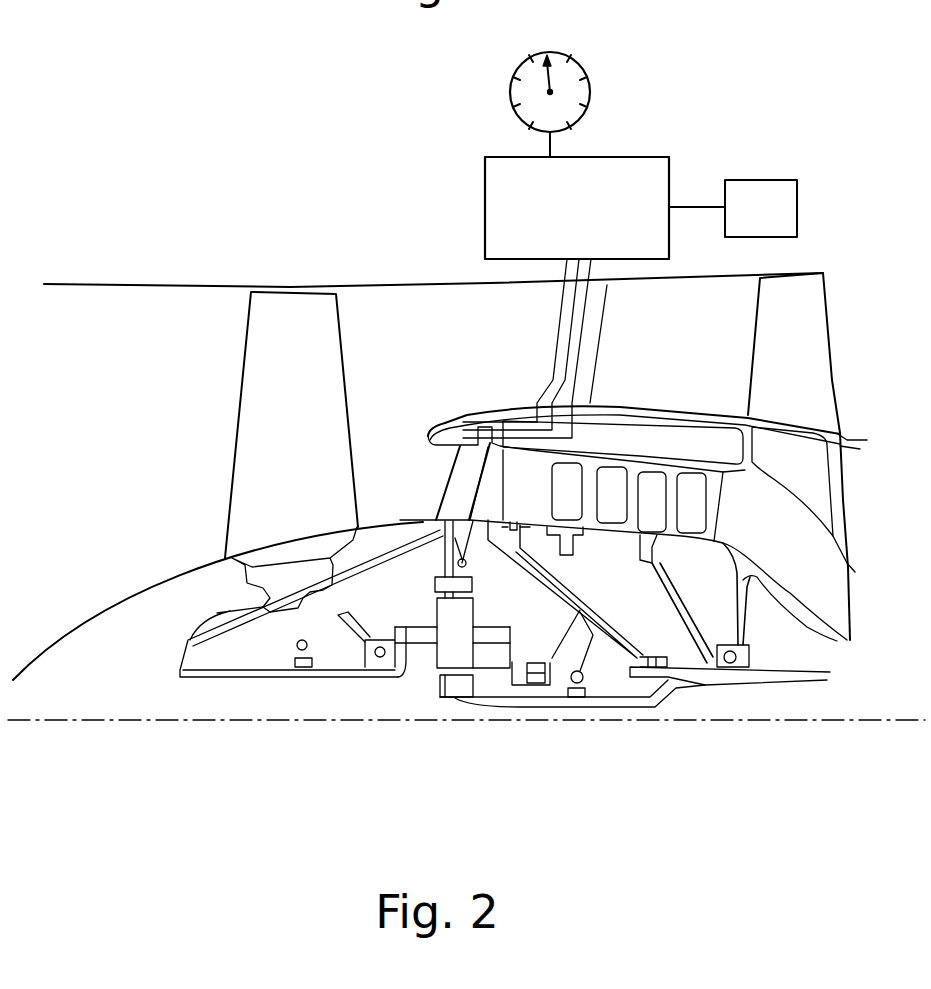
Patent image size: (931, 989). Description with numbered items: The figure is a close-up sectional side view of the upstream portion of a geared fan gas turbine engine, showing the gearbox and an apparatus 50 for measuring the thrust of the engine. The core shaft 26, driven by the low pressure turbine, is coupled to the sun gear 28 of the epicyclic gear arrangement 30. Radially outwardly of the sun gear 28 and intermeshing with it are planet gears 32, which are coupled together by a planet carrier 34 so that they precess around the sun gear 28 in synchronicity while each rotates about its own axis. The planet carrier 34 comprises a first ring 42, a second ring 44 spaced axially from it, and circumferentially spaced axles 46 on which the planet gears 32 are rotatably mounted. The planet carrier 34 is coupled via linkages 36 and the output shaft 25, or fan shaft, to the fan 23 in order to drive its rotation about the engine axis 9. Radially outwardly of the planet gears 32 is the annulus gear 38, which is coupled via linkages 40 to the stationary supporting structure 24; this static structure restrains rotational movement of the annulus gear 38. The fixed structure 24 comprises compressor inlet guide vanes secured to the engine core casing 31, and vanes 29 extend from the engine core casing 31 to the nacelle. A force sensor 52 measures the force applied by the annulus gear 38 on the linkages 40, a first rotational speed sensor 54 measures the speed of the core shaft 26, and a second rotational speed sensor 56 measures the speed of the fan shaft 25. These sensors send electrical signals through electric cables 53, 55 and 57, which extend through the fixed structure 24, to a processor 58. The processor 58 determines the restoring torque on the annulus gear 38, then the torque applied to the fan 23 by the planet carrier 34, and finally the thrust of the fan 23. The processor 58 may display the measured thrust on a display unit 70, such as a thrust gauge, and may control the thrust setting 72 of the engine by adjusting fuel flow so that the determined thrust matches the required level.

The engine axis 9 is at (212, 722).
The fan 23 is at (255, 427).
The stationary supporting structure 24 is at (463, 482).
The output shaft 25 is at (263, 663).
The core shaft 26 is at (623, 707).
The sun gear 28 is at (452, 690).
The vanes 29 is at (553, 300).
The epicyclic gear arrangement 30 is at (405, 680).
The engine core casing 31 is at (442, 420).
The planet gears 32 is at (443, 650).
The planet carrier 34 is at (515, 684).
The linkages 36 is at (403, 657).
The annulus gear 38 is at (455, 584).
The linkages 40 is at (466, 567).
The first ring 42 is at (510, 660).
The second ring 44 is at (345, 612).
The axles 46 is at (490, 645).
The apparatus for measuring thrust 50 is at (368, 207).
The force sensor 52 is at (444, 560).
The electric cable 53 is at (552, 358).
The first rotational speed sensor 54 is at (577, 697).
The electric cable 55 is at (587, 340).
The second rotational speed sensor 56 is at (302, 650).
The electric cable 57 is at (560, 328).
The processor 58 is at (638, 157).
The display unit 70 is at (568, 50).
The thrust setting 72 is at (762, 193).